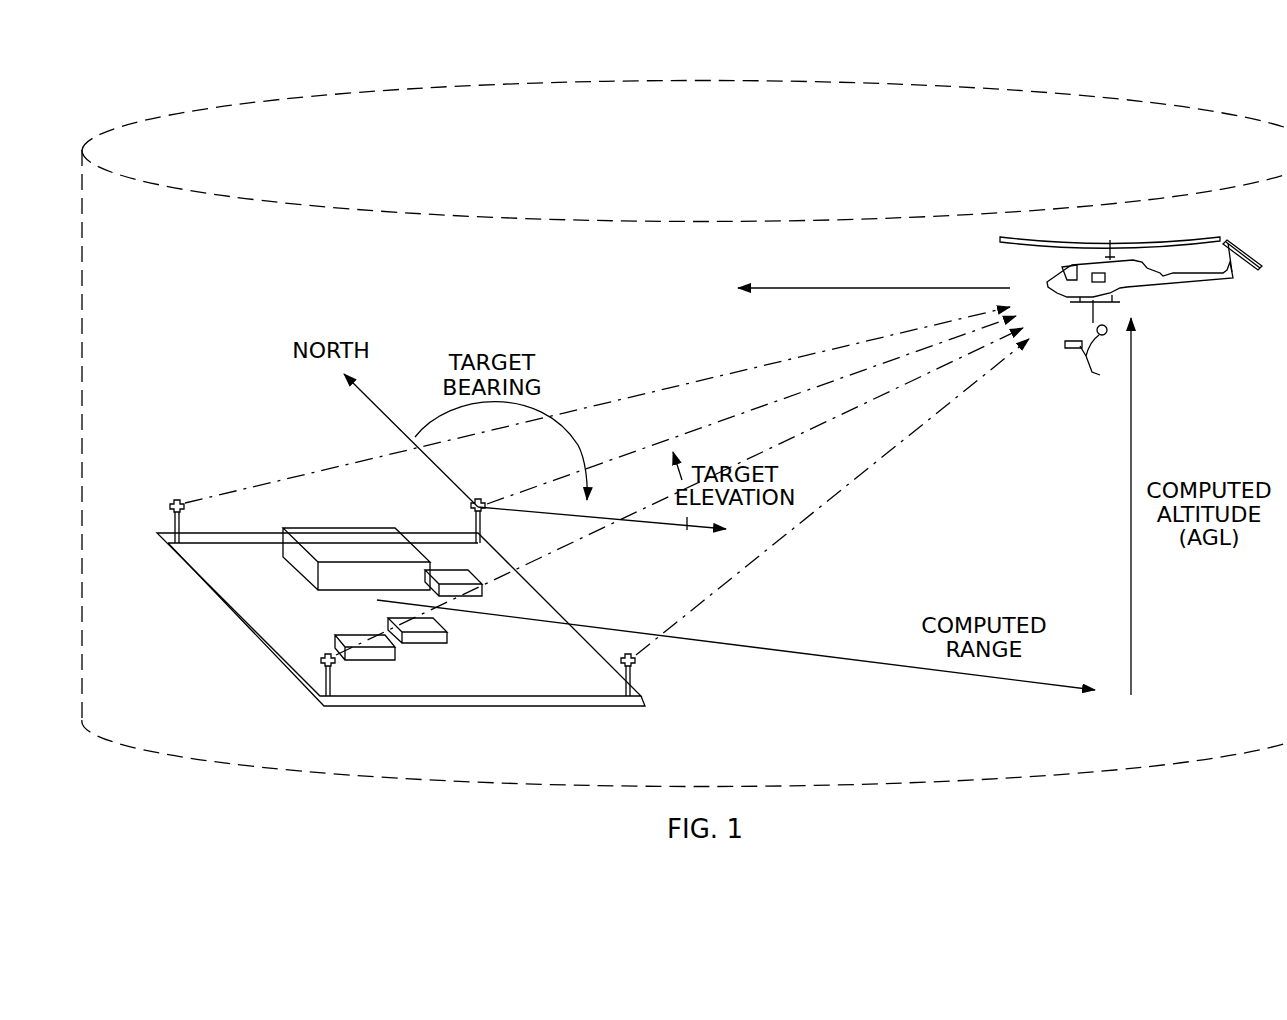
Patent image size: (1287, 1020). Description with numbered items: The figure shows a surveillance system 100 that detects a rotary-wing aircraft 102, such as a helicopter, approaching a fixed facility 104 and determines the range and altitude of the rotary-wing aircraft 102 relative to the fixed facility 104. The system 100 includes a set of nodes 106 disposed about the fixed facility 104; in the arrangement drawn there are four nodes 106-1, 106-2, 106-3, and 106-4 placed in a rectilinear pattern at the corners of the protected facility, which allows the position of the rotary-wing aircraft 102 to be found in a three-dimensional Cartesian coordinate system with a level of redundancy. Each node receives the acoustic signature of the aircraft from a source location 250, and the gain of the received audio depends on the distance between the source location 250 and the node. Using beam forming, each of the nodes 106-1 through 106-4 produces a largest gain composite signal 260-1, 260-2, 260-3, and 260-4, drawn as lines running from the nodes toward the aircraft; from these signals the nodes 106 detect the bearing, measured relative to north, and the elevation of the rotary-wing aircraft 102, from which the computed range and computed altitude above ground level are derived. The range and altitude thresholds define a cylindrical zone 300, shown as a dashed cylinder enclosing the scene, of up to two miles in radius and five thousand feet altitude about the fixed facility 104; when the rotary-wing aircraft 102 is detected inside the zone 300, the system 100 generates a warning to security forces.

The surveillance system 100 is at (474, 290).
The rotary-wing aircraft 102 is at (1070, 269).
The fixed facility 104 is at (266, 578).
The set of nodes 106 is at (211, 360).
The first node 106-1 is at (177, 503).
The second node 106-2 is at (475, 505).
The third node 106-3 is at (636, 662).
The fourth node 106-4 is at (322, 661).
The source location 250 is at (992, 226).
The largest gain composite signal 260-1 is at (640, 393).
The largest gain composite signal 260-2 is at (805, 390).
The largest gain composite signal 260-3 is at (762, 555).
The largest gain composite signal 260-4 is at (842, 412).
The cylindrical zone 300 is at (957, 84).